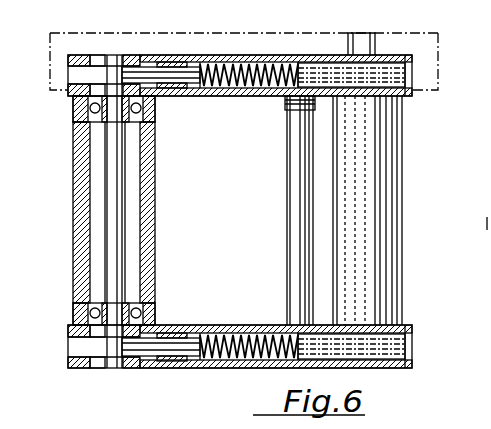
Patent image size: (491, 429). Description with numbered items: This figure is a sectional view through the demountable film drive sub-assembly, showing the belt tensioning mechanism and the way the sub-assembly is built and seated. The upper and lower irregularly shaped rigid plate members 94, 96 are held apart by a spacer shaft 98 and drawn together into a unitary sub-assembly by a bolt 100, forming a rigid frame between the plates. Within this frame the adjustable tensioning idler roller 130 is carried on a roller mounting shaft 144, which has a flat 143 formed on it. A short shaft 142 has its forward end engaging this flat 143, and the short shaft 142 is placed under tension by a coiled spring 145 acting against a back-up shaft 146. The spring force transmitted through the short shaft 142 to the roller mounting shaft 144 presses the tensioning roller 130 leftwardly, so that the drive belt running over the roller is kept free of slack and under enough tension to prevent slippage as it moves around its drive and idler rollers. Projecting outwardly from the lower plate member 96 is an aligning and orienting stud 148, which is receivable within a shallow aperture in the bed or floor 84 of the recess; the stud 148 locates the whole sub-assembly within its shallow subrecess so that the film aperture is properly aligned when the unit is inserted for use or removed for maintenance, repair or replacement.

The bed or floor 84 is at (78, 33).
The upper plate member 94 is at (408, 328).
The lower plate member 96 is at (407, 97).
The spacer shaft 98 is at (388, 172).
The bolt 100 is at (298, 198).
The adjustable tensioning idler roller 130 is at (157, 262).
The short shaft 142 is at (190, 68).
The flat 143 is at (124, 70).
The roller mounting shaft 144 is at (122, 210).
The coiled spring 145 is at (233, 86).
The back-up shaft 146 is at (410, 82).
The aligning and orienting stud 148 is at (355, 43).